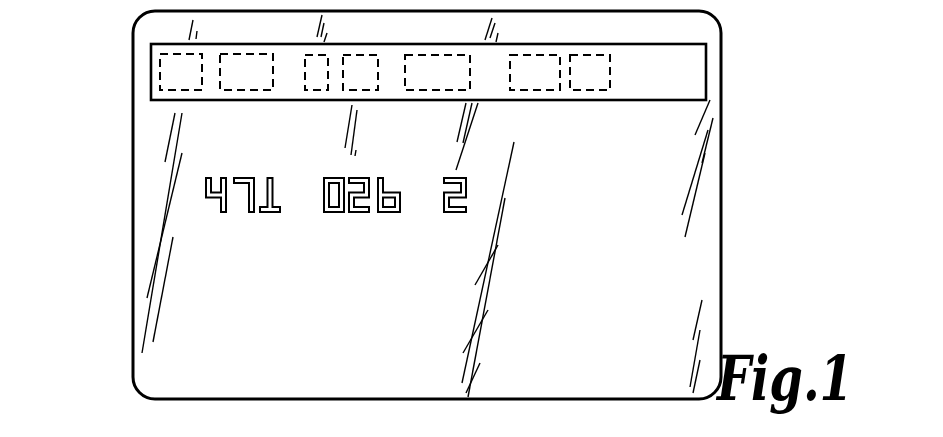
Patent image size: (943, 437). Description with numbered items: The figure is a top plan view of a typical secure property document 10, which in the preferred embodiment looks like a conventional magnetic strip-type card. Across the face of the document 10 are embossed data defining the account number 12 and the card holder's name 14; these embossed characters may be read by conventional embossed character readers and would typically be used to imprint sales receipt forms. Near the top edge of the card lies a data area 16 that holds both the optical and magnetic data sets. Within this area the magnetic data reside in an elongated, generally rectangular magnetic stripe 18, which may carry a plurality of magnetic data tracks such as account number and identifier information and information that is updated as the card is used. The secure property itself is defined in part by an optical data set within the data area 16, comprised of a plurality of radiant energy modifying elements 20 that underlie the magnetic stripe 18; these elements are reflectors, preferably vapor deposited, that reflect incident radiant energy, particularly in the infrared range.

The secure property document 10 is at (114, 160).
The embossed account number data 12 is at (388, 228).
The embossed card holder's name data 14 is at (368, 322).
The data area 16 is at (558, 116).
The magnetic stripe 18 is at (648, 90).
The radiant energy modifying elements 20 is at (237, 80).